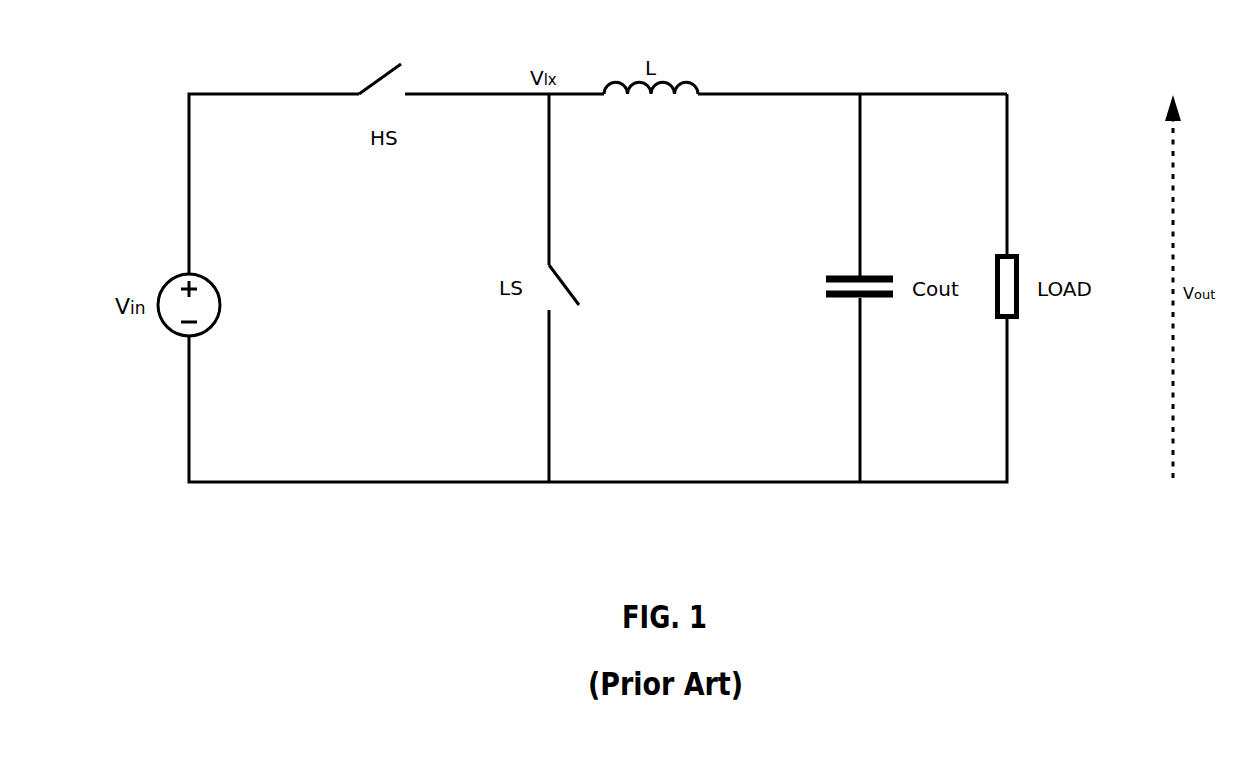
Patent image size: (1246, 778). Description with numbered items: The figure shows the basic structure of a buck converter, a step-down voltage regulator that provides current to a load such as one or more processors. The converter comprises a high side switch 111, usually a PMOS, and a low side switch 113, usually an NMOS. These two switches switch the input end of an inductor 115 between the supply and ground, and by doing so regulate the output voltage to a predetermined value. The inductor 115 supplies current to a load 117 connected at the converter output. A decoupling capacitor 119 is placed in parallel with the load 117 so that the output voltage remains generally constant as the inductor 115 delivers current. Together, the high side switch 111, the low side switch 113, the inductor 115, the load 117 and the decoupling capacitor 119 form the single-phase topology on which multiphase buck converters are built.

The high side switch 111 is at (388, 72).
The low side switch 113 is at (565, 280).
The inductor 115 is at (683, 82).
The load 117 is at (1018, 302).
The decoupling capacitor 119 is at (878, 298).